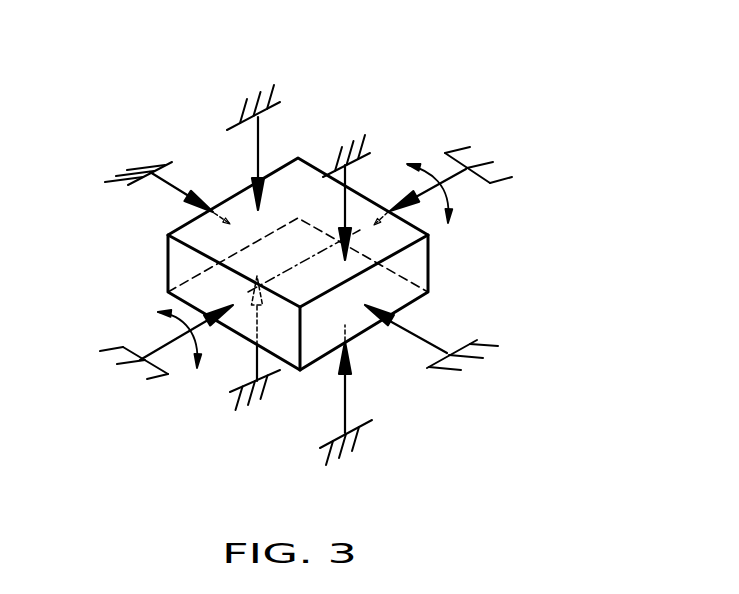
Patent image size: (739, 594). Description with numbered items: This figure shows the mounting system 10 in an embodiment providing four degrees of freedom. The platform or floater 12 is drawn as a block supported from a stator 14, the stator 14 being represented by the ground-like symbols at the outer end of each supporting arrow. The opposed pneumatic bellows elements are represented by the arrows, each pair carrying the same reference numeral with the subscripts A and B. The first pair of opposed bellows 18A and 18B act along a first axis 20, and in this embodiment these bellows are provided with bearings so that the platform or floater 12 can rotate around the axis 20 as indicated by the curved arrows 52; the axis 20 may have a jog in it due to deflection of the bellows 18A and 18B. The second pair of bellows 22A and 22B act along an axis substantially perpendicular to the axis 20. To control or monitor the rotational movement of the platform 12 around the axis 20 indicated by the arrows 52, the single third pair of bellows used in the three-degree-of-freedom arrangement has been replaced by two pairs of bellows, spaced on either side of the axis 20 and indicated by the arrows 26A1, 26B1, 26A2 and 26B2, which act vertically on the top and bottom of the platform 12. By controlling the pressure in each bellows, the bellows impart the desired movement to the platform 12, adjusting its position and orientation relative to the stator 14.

The mounting system 10 is at (407, 83).
The platform or floater 12 is at (430, 260).
The stator 14 is at (147, 153).
The first opposed bellows 18A is at (161, 345).
The first opposed bellows 18B is at (420, 169).
The first axis 20 is at (302, 262).
The second opposed bellows 22A is at (170, 192).
The second opposed bellows 22B is at (418, 337).
The bellows 26A1 is at (259, 128).
The bellows 26A2 is at (345, 198).
The bellows 26B1 is at (233, 362).
The bellows 26B2 is at (343, 392).
The arrows indicating rotation 52 is at (445, 193).